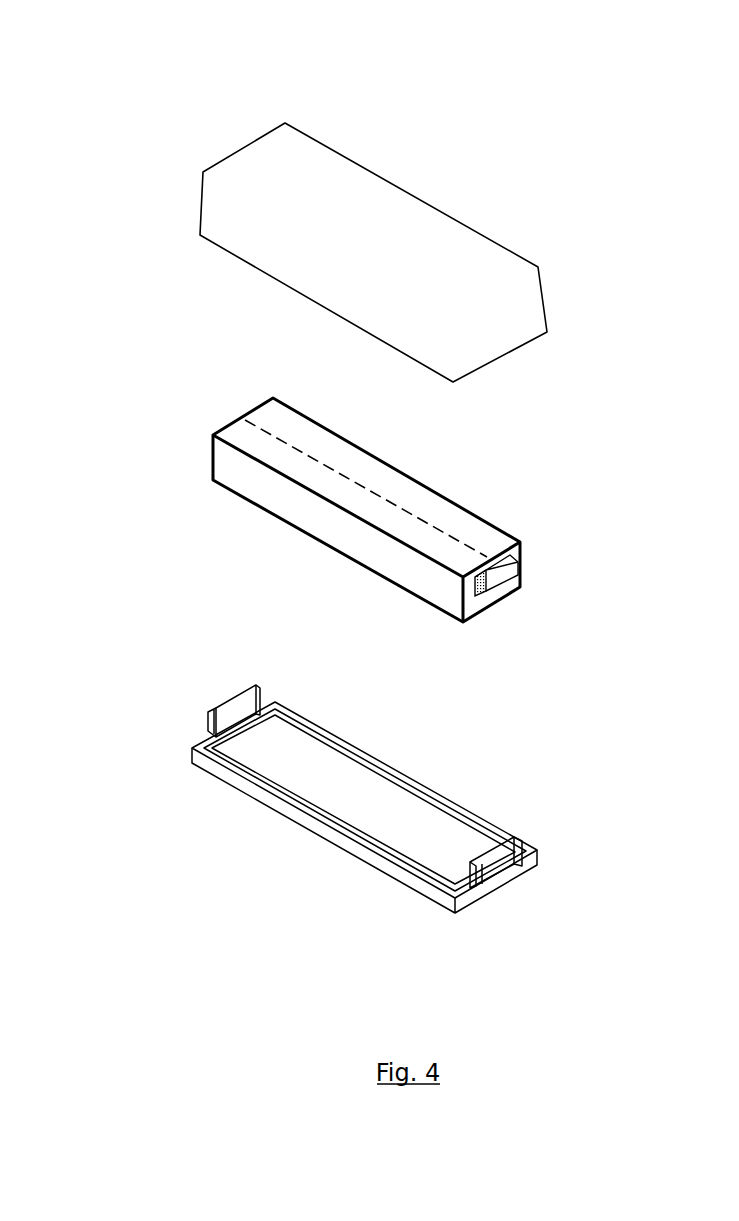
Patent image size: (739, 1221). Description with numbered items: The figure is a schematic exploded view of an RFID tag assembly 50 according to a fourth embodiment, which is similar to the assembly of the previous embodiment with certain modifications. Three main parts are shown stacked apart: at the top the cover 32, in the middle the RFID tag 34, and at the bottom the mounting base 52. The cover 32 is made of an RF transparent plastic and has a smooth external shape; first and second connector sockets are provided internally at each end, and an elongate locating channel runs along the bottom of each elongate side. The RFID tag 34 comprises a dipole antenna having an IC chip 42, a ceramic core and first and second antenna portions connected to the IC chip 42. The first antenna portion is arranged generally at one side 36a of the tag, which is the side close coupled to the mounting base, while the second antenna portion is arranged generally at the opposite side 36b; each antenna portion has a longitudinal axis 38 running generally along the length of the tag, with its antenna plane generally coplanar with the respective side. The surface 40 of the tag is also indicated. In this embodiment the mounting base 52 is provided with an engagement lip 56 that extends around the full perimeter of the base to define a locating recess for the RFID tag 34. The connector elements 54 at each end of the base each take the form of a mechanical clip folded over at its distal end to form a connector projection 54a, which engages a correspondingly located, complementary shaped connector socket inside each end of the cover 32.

The RFID tag assembly 50 is at (146, 68).
The cover 32 is at (463, 247).
The RFID tag 34 is at (265, 498).
The one side of the RFID tag 36a is at (338, 564).
The opposite side of the RFID tag 36b is at (392, 473).
The longitudinal axis 38 is at (278, 435).
The top surface 40 is at (441, 505).
The IC chip 42 is at (502, 582).
The mounting base 52 is at (413, 828).
The connector elements 54 is at (228, 702).
The connector projection 54a is at (500, 867).
The engagement lip 56 is at (297, 813).